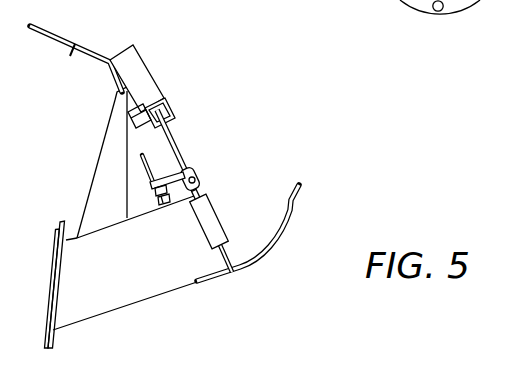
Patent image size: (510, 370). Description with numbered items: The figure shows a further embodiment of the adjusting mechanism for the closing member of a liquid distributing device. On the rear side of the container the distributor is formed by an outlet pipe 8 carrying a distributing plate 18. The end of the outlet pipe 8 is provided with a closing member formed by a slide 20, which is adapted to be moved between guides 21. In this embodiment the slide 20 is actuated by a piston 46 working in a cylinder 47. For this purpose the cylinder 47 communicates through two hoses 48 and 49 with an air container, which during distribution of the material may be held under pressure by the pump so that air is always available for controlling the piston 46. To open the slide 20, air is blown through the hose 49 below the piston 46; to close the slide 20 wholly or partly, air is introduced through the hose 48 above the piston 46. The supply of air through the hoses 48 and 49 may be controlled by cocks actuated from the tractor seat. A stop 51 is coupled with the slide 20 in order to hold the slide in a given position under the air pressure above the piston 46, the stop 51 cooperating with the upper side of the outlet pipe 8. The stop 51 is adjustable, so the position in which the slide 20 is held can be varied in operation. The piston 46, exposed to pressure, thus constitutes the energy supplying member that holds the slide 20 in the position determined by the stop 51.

The outlet pipe 8 is at (121, 215).
The distributing plate 18 is at (242, 272).
The slide 20 is at (202, 155).
The guides 21 is at (222, 221).
The piston 46 is at (170, 106).
The cylinder 47 is at (147, 78).
The hose 48 is at (71, 31).
The hose 49 is at (76, 59).
The stop 51 is at (163, 199).